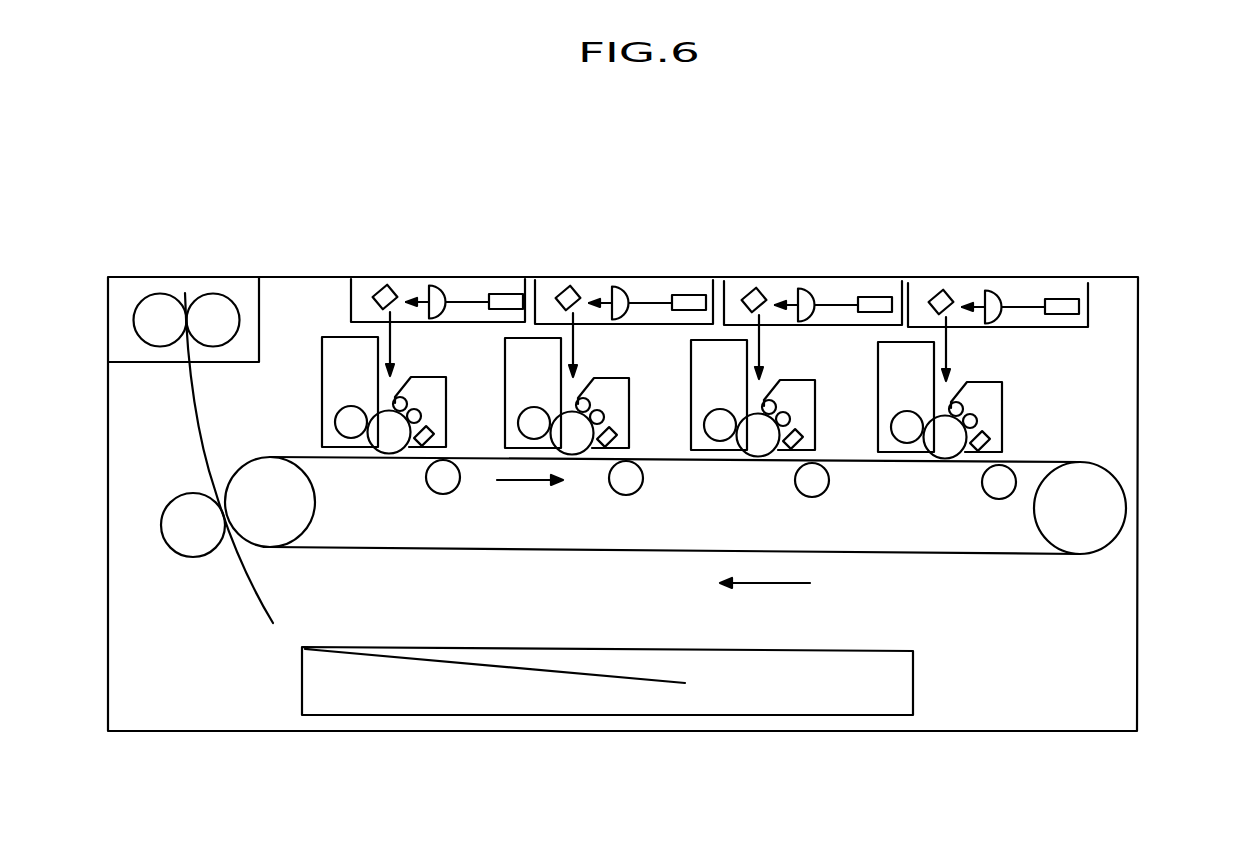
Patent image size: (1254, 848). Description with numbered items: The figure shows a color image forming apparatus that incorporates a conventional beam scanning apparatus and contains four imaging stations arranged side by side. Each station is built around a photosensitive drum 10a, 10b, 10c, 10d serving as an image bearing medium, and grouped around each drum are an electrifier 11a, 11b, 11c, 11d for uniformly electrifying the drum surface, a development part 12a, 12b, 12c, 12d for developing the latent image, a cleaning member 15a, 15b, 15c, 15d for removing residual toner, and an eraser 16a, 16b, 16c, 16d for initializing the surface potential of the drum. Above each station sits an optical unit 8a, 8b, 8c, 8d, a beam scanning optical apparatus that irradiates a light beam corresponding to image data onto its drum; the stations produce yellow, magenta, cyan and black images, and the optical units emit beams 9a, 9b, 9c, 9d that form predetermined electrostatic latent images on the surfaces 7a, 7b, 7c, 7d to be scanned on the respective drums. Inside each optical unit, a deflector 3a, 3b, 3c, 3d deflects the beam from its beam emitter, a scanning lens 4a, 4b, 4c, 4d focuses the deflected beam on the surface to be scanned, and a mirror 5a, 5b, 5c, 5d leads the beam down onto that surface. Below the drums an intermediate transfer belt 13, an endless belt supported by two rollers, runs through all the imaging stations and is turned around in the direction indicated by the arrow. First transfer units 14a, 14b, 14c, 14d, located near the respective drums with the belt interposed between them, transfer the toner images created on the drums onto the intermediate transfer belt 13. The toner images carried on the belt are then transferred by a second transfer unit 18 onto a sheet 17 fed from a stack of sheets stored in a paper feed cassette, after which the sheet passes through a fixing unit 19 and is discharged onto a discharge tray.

The deflector 3a is at (510, 294).
The deflector 3b is at (695, 296).
The deflector 3c is at (878, 297).
The deflector 3d is at (1065, 299).
The scanning lens 4a is at (447, 287).
The scanning lens 4b is at (614, 288).
The scanning lens 4c is at (802, 290).
The scanning lens 4d is at (990, 291).
The mirror 5a is at (378, 292).
The mirror 5b is at (571, 290).
The mirror 5c is at (756, 293).
The mirror 5d is at (942, 294).
The surface to be scanned 7a is at (388, 411).
The surface to be scanned 7b is at (559, 452).
The surface to be scanned 7c is at (746, 454).
The surface to be scanned 7d is at (931, 420).
The optical unit 8a is at (347, 304).
The optical unit 8b is at (678, 284).
The optical unit 8c is at (842, 284).
The optical unit 8d is at (1024, 285).
The beam 9a is at (477, 305).
The beam 9b is at (654, 308).
The beam 9c is at (836, 310).
The beam 9d is at (1024, 312).
The photosensitive drum 10a is at (384, 452).
The photosensitive drum 10b is at (570, 449).
The photosensitive drum 10c is at (757, 450).
The photosensitive drum 10d is at (944, 455).
The electrifier 11a is at (403, 396).
The electrifier 11b is at (584, 398).
The electrifier 11c is at (771, 416).
The electrifier 11d is at (961, 444).
The development part 12a is at (348, 425).
The development part 12b is at (525, 436).
The development part 12c is at (718, 438).
The development part 12d is at (909, 443).
The intermediate transfer belt 13 is at (1028, 556).
The first transfer unit 14a is at (441, 494).
The first transfer unit 14b is at (629, 484).
The first transfer unit 14c is at (816, 495).
The first transfer unit 14d is at (1014, 486).
The cleaning member 15a is at (433, 430).
The cleaning member 15b is at (597, 447).
The cleaning member 15c is at (794, 448).
The cleaning member 15d is at (990, 438).
The eraser 16a is at (419, 409).
The eraser 16b is at (599, 410).
The eraser 16c is at (782, 427).
The eraser 16d is at (964, 418).
The sheet 17 is at (243, 573).
The second transfer unit 18 is at (170, 538).
The fixing unit 19 is at (148, 322).